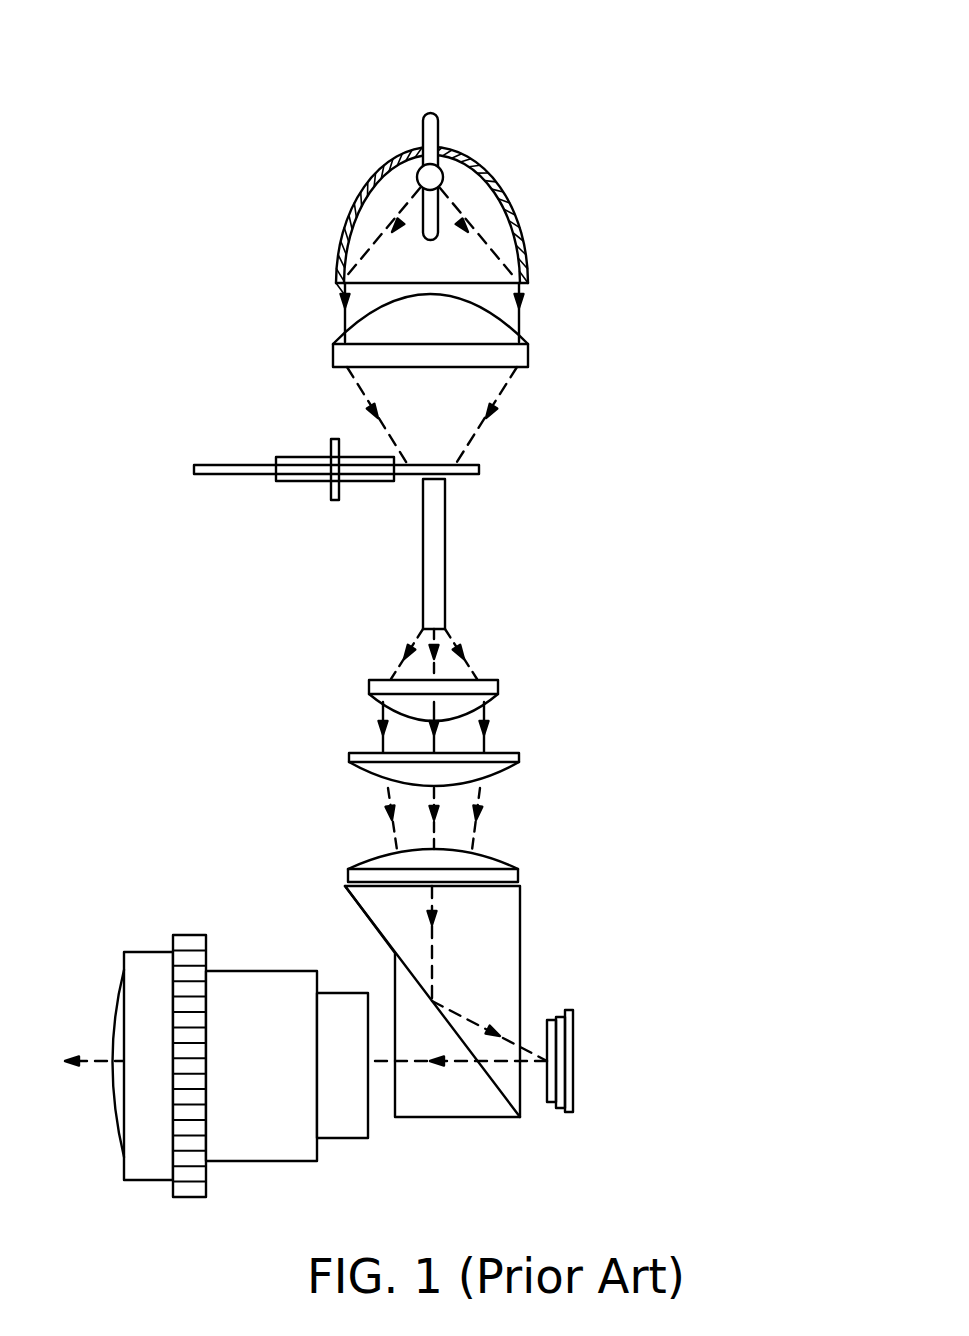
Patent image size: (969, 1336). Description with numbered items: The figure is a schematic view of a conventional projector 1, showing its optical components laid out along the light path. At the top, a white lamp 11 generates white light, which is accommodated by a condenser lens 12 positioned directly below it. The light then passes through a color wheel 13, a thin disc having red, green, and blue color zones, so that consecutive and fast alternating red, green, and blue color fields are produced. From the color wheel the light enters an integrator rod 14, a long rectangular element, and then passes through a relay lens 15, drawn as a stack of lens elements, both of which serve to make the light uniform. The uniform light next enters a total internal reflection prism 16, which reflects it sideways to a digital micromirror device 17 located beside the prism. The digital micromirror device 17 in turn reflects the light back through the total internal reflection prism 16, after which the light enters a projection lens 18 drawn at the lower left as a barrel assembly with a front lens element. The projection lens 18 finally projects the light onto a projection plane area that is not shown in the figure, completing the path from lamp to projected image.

The projector 1 is at (537, 93).
The white lamp 11 is at (505, 166).
The condenser lens 12 is at (520, 356).
The color wheel 13 is at (240, 468).
The integrator rod 14 is at (431, 560).
The relay lens 15 is at (530, 673).
The total internal reflection prism 16 is at (508, 917).
The digital micromirror device 17 is at (570, 1048).
The projection lens 18 is at (148, 968).